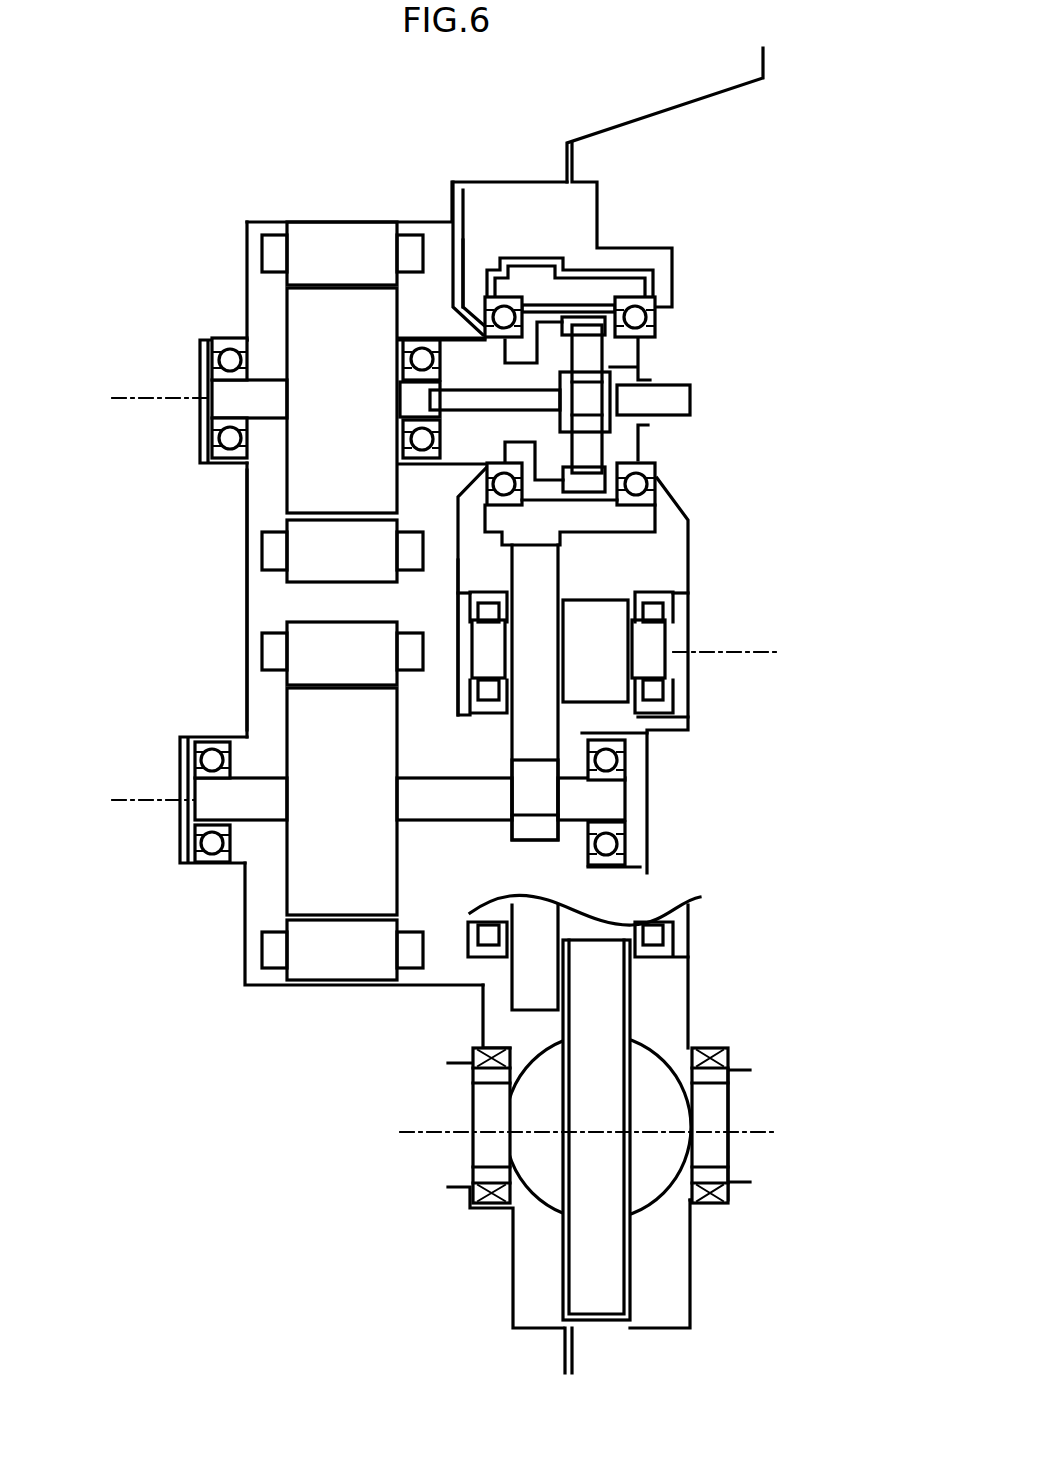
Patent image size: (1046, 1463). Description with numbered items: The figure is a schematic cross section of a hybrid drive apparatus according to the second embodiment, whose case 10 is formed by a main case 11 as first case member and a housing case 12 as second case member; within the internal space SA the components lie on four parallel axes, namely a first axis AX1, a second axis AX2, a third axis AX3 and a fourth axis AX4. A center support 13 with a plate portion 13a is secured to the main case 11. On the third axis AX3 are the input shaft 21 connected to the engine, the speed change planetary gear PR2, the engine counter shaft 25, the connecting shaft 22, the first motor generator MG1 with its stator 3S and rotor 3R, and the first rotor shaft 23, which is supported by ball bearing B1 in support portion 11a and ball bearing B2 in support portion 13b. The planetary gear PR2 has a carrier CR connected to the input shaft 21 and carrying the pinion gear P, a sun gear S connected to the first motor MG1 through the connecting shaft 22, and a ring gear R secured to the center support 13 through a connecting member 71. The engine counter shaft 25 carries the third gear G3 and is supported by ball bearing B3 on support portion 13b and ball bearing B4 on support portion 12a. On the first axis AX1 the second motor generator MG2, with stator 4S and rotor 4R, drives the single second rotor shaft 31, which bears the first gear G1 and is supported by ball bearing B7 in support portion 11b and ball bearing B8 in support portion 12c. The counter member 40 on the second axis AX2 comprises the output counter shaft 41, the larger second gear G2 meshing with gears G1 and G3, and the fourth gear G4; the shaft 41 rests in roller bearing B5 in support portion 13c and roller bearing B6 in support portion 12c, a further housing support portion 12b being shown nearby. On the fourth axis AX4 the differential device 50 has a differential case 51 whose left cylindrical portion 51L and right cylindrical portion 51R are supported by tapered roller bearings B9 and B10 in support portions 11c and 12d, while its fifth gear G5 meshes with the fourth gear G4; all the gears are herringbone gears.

The case 10 is at (553, 93).
The main case 11 is at (463, 172).
The housing case 12 is at (592, 127).
The center support 13 is at (449, 228).
The plate portion 13a is at (470, 243).
The support portion 13b is at (450, 336).
The support portion 13c is at (462, 597).
The support portion 11a is at (212, 336).
The support portion 11b is at (213, 866).
The support portion 11c is at (486, 1045).
The support portion 12a is at (655, 466).
The case support portion 12b is at (672, 595).
The support portion 12c is at (648, 868).
The support portion 12d is at (712, 1205).
The internal space SA is at (246, 490).
The first motor generator MG1 is at (188, 215).
The stator 3S is at (300, 258).
The rotor 3R is at (300, 300).
The second motor generator MG2 is at (188, 618).
The stator 4S is at (300, 658).
The rotor 4R is at (300, 705).
The first axis AX1 is at (130, 799).
The second axis AX2 is at (748, 652).
The third axis AX3 is at (139, 397).
The fourth axis AX4 is at (612, 1134).
The input shaft 21 is at (700, 398).
The connecting shaft 22 is at (480, 394).
The first rotor shaft 23 is at (225, 405).
The engine counter shaft 25 is at (660, 520).
The second rotor shaft 31 is at (200, 806).
The counter member 40 is at (695, 614).
The output counter shaft 41 is at (660, 680).
The differential device 50 is at (665, 1042).
The differential case 51 is at (522, 1198).
The left cylindrical portion 51L is at (470, 1150).
The right cylindrical portion 51R is at (730, 1166).
The connecting member 71 is at (500, 462).
The speed change planetary gear PR2 is at (603, 288).
The ring gear R is at (572, 316).
The sun gear S is at (585, 438).
The pinion gear P is at (640, 428).
The carrier CR is at (640, 363).
The first gear G1 is at (520, 838).
The second gear G2 is at (520, 748).
The third gear G3 is at (558, 545).
The fourth gear G4 is at (600, 605).
The fifth gear G5 is at (632, 975).
The ball bearing B1 is at (215, 372).
The ball bearing B2 is at (428, 460).
The ball bearing B3 is at (510, 297).
The ball bearing B4 is at (642, 300).
The roller bearing B5 is at (480, 714).
The roller bearing B6 is at (668, 716).
The ball bearing B7 is at (200, 850).
The ball bearing B8 is at (628, 840).
The tapered roller bearing B9 is at (478, 1078).
The tapered roller bearing B10 is at (730, 1062).